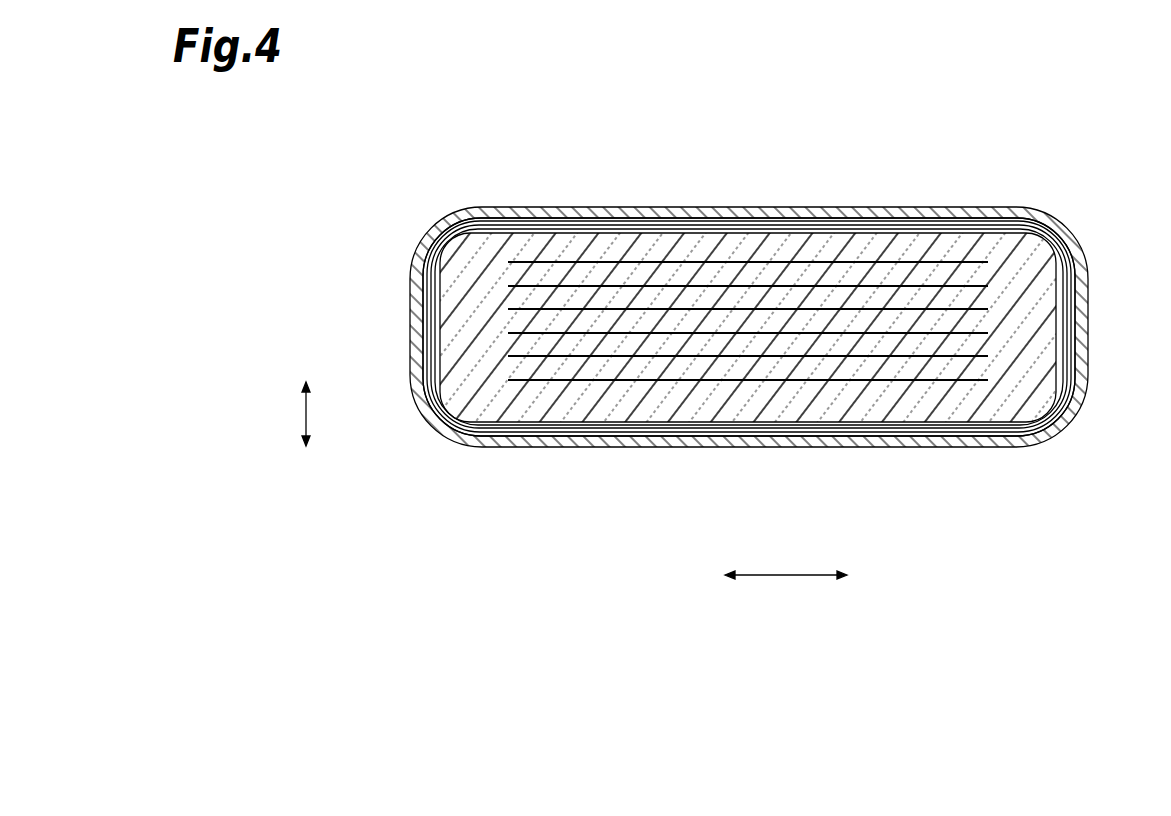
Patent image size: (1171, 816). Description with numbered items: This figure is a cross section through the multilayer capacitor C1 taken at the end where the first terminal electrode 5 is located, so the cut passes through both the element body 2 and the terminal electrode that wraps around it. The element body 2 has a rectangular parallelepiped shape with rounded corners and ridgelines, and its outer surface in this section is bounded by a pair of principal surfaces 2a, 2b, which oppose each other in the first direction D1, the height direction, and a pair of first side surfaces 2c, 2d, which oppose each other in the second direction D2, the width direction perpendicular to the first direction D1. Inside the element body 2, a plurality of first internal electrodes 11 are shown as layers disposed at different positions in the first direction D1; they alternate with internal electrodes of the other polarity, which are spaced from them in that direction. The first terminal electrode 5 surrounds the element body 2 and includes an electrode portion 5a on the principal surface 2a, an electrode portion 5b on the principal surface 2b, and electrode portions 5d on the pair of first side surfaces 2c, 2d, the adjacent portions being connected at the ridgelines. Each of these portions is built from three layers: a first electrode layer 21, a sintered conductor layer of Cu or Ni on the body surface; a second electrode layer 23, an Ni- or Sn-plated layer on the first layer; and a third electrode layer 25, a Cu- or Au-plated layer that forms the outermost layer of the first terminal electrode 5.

The multilayer capacitor C1 is at (1087, 172).
The element body 2 is at (812, 450).
The principal surface 2a is at (914, 208).
The principal surface 2b is at (573, 449).
The first side surface 2c is at (422, 350).
The first side surface 2d is at (1062, 291).
The first terminal electrode 5 is at (527, 113).
The third electrode layer 25 is at (556, 213).
The second electrode layer 23 is at (587, 213).
The first electrode layer 21 is at (640, 213).
The electrode portion 5a is at (806, 208).
The electrode portion 5b is at (890, 449).
The electrode portions 5d is at (412, 322).
The first internal electrodes 11 is at (741, 288).
The first direction D1 is at (306, 415).
The second direction D2 is at (796, 580).